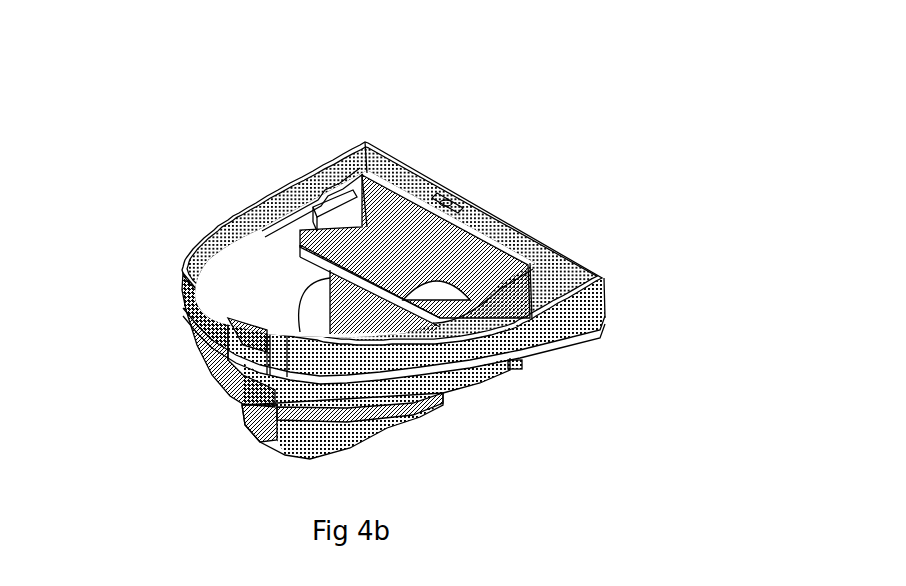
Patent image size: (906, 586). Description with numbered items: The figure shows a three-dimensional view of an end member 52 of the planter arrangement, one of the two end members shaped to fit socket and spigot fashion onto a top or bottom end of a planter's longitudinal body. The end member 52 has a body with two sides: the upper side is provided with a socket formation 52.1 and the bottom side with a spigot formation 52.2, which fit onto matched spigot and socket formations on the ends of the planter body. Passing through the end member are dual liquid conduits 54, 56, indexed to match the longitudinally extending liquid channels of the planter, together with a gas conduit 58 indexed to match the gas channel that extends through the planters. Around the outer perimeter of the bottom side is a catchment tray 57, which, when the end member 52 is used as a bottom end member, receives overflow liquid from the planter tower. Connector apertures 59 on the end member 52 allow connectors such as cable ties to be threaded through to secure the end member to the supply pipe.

The end member 52 is at (651, 98).
The socket formation 52.1 is at (268, 164).
The spigot formation 52.2 is at (277, 477).
The liquid conduit 54 is at (361, 294).
The liquid conduit 56 is at (426, 278).
The catchment tray 57 is at (231, 245).
The gas conduit 58 is at (485, 288).
The connector aperture 59 is at (239, 306).